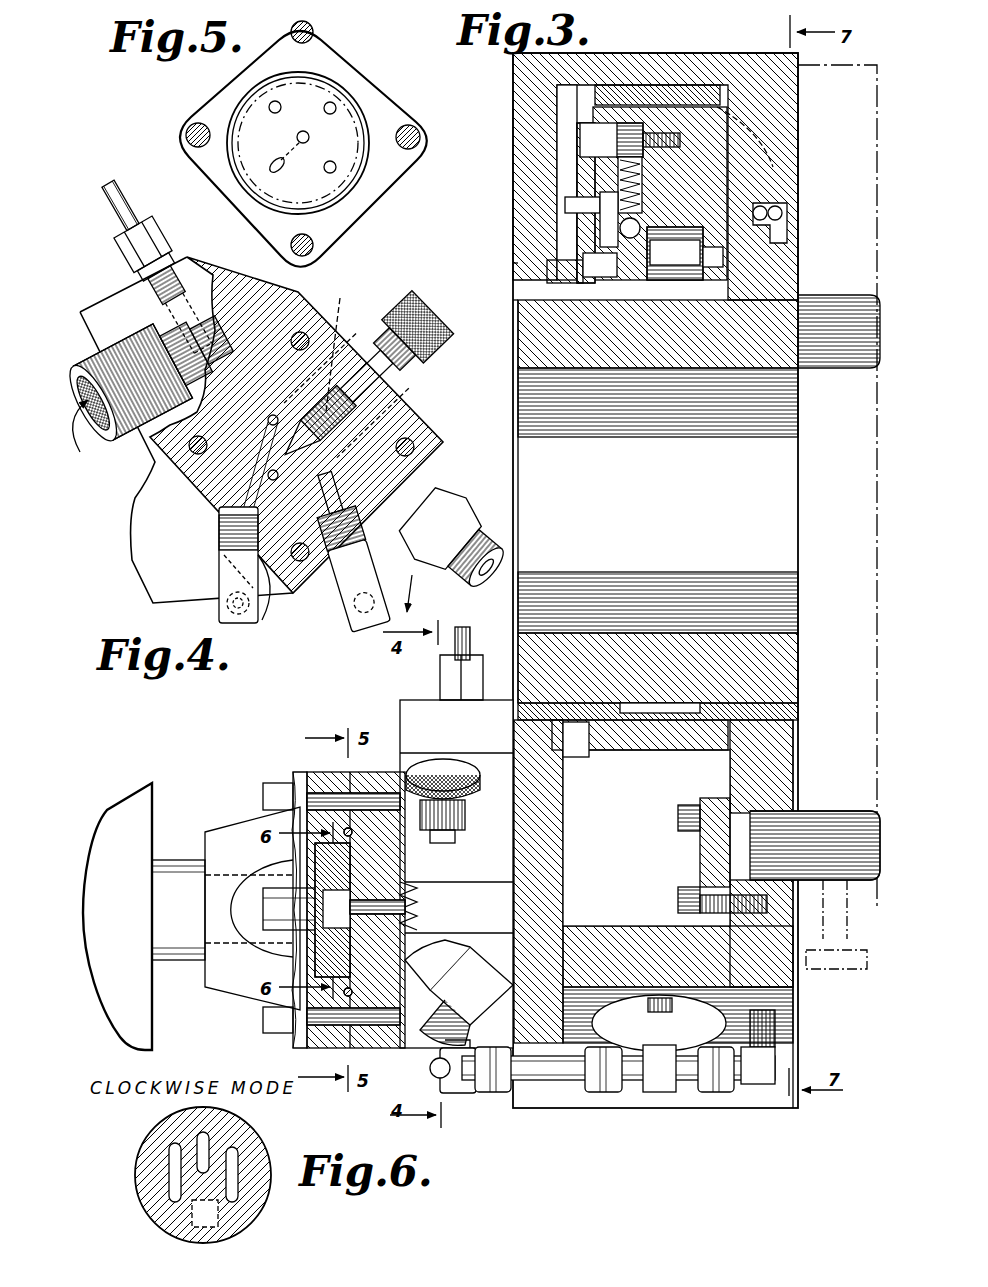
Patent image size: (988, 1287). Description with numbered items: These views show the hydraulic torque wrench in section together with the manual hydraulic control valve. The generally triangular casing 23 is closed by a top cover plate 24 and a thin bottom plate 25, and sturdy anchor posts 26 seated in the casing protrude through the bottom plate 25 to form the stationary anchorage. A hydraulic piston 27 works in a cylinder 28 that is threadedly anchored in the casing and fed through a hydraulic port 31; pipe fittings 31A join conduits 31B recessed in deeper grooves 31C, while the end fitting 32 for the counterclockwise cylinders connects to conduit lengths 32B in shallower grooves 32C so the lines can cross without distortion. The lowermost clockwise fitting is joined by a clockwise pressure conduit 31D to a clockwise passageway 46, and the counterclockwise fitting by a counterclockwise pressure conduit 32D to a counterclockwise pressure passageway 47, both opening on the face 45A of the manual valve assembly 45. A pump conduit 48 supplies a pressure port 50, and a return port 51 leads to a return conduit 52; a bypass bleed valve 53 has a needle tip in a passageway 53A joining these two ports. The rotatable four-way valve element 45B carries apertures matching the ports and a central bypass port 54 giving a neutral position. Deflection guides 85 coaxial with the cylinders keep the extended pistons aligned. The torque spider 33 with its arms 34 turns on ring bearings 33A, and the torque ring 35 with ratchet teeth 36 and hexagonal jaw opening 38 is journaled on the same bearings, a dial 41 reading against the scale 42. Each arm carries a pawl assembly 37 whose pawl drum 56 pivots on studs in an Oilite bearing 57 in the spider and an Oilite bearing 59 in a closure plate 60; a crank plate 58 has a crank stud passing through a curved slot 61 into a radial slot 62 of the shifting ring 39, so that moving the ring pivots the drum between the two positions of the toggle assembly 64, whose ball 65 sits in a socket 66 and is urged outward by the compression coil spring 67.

In FIG. 3, the casing 23 is at (600, 937).
In FIG. 3, the top cover plate 24 is at (513, 72).
In FIG. 3, the bottom plate 25 is at (795, 760).
In FIG. 3, the anchor posts 26 is at (833, 369).
In FIG. 3, the hydraulic piston 27 is at (707, 142).
In FIG. 3, the hydraulic cylinder 28 is at (659, 1023).
In FIG. 4, the hydraulic port 31 is at (218, 598).
In FIG. 3, the hydraulic port 31 is at (658, 1092).
In FIG. 3, the pipe fittings 31A is at (776, 1060).
In FIG. 3, the conduits 31B is at (782, 211).
In FIG. 3, the grooves 31C is at (770, 210).
In FIG. 4, the clockwise pressure conduit 31D is at (277, 599).
In FIG. 3, the clockwise pressure conduit 31D is at (580, 1093).
In FIG. 4, the end fitting 32 is at (438, 598).
In FIG. 3, the conduit lengths 32B is at (786, 224).
In FIG. 3, the grooves 32C is at (788, 238).
In FIG. 4, the counterclockwise pressure conduit 32D is at (325, 585).
In FIG. 3, the counterclockwise pressure conduit 32D is at (515, 1086).
In FIG. 3, the torque spider 33 is at (576, 748).
In FIG. 3, the ring bearings 33A is at (518, 712).
In FIG. 3, the arms 34 is at (728, 113).
In FIG. 3, the torque ring 35 is at (773, 317).
In FIG. 3, the ratchet teeth 36 is at (668, 282).
In FIG. 3, the pawl assembly 37 is at (632, 282).
In FIG. 3, the jaw opening 38 is at (773, 373).
In FIG. 3, the shifting ring 39 is at (567, 240).
In FIG. 3, the dial 41 is at (513, 300).
In FIG. 3, the scale 42 is at (514, 283).
In FIG. 5, the manual valve assembly 45 is at (386, 80).
In FIG. 4, the manual valve assembly 45 is at (98, 300).
In FIG. 6, the manual valve assembly 45 is at (273, 1037).
In FIG. 5, the valve face 45A is at (256, 137).
In FIG. 6, the valve face 45A is at (352, 852).
In FIG. 5, the four-way valve element 45B is at (243, 120).
In FIG. 6, the four-way valve element 45B is at (297, 857).
In FIG. 5, the clockwise passageway 46 is at (270, 106).
In FIG. 4, the clockwise passageway 46 is at (270, 425).
In FIG. 5, the counterclockwise pressure passageway 47 is at (336, 171).
In FIG. 4, the counterclockwise pressure passageway 47 is at (370, 425).
In FIG. 4, the pump conduit 48 is at (115, 435).
In FIG. 6, the pump conduit 48 is at (117, 916).
In FIG. 5, the pressure port 50 is at (270, 168).
In FIG. 4, the pressure port 50 is at (268, 478).
In FIG. 5, the return port 51 is at (334, 103).
In FIG. 4, the return port 51 is at (398, 394).
In FIG. 4, the return conduit 52 is at (415, 470).
In FIG. 3, the return conduit 52 is at (459, 992).
In FIG. 4, the bypass bleed valve 53 is at (372, 352).
In FIG. 3, the bypass bleed valve 53 is at (462, 825).
In FIG. 4, the passageway 53A is at (342, 344).
In FIG. 6, the bypass port 54 is at (318, 912).
In FIG. 3, the pawl drum 56 is at (675, 253).
In FIG. 3, the Oilite bearing 57 is at (723, 258).
In FIG. 3, the crank plate 58 is at (600, 220).
In FIG. 3, the Oilite bearing 59 is at (555, 265).
In FIG. 3, the closure plate 60 is at (613, 127).
In FIG. 3, the curved slot 61 is at (612, 190).
In FIG. 3, the radial slot 62 is at (565, 203).
In FIG. 3, the toggle assembly 64 is at (600, 173).
In FIG. 3, the ball 65 is at (640, 225).
In FIG. 3, the socket 66 is at (650, 278).
In FIG. 3, the compression coil spring 67 is at (600, 160).
In FIG. 3, the deflection guides 85 is at (650, 88).